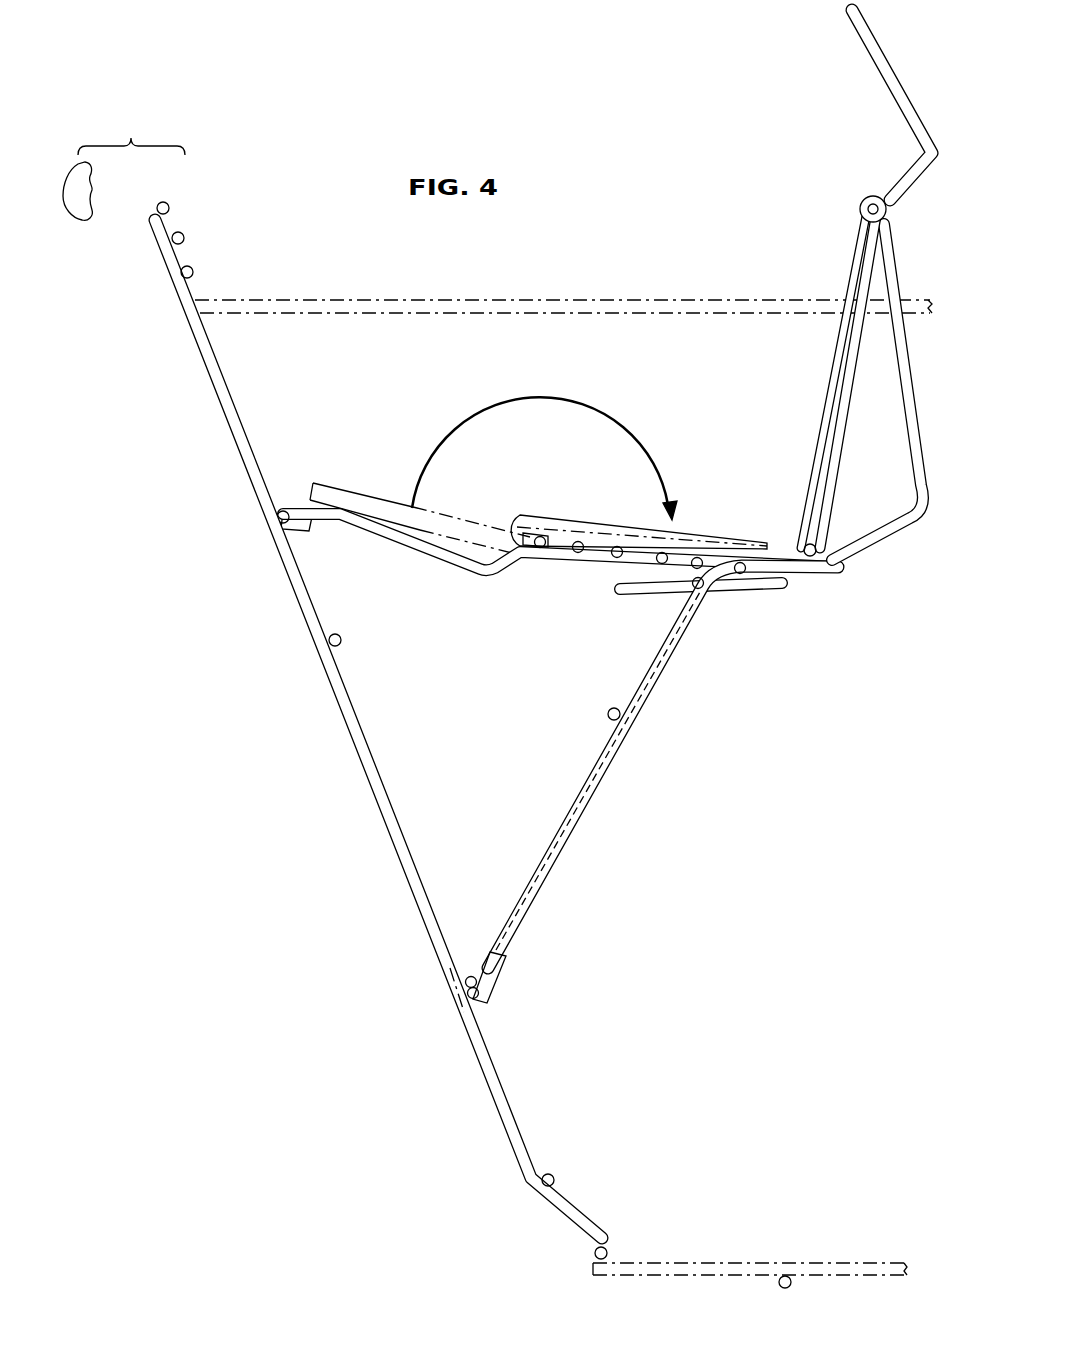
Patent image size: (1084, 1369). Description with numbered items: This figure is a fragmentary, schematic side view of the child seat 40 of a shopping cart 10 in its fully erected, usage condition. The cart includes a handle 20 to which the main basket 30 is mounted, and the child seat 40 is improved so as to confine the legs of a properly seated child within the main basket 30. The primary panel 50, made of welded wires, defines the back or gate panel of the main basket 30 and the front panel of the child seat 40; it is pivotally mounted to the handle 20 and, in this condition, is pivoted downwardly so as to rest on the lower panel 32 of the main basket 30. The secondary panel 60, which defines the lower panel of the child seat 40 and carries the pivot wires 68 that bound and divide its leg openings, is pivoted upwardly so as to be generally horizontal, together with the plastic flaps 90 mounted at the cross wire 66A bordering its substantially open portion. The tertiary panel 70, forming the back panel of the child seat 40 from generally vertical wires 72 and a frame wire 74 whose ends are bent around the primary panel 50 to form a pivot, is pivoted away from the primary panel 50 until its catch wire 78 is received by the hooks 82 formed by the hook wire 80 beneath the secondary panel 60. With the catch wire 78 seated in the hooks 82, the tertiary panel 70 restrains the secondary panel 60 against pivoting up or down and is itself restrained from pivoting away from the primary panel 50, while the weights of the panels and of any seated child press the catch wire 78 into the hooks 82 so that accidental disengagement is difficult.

The shopping cart 10 is at (318, 182).
The handle 20 is at (97, 230).
The main basket 30 is at (670, 290).
The lower panel 32 is at (742, 1263).
The child seat 40 is at (634, 784).
The primary panel 50 is at (322, 740).
The secondary panel 60 is at (541, 578).
The cross wire 66A is at (540, 525).
The pivot wires 68 is at (453, 550).
The tertiary panel 70 is at (799, 285).
The generally vertical wires 72 is at (828, 412).
The frame wire 74 is at (838, 453).
The catch wire 78 is at (722, 582).
The hook wire 80 is at (627, 580).
The hooks 82 is at (672, 590).
The plastic flaps 90 is at (605, 523).